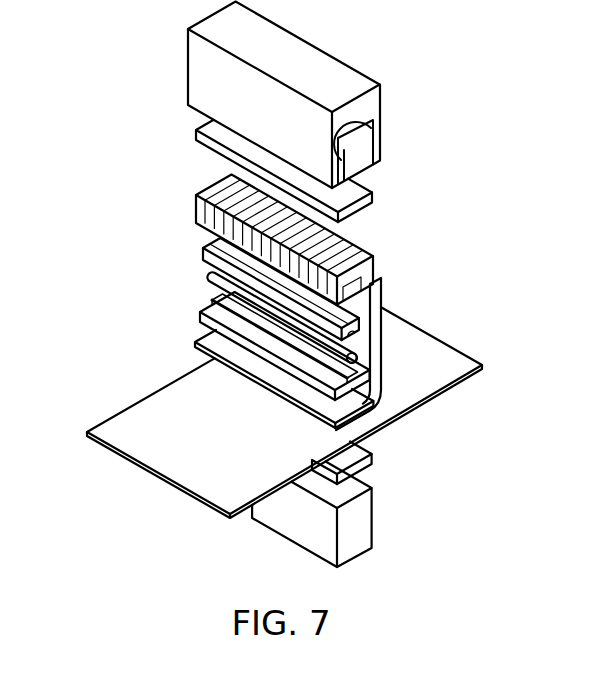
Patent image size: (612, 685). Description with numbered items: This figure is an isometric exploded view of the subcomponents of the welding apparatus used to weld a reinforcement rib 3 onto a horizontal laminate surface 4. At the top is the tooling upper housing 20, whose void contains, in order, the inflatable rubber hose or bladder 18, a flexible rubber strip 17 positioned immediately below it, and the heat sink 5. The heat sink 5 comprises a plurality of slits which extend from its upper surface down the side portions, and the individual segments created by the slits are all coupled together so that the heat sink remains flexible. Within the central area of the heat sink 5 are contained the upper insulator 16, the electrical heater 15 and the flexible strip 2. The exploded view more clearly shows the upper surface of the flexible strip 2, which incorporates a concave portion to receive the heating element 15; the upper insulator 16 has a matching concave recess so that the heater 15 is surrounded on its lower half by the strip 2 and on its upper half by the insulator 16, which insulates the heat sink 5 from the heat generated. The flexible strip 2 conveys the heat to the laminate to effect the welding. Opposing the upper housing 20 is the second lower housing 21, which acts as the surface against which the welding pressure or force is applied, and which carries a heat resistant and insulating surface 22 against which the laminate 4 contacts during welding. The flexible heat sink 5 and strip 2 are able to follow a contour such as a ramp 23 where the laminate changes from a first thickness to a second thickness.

The flexible strip 2 is at (210, 314).
The reinforcement rib 3 is at (206, 345).
The horizontal laminate surface 4 is at (127, 428).
The heat sink 5 is at (216, 189).
The electrical heater 15 is at (212, 276).
The upper insulator 16 is at (214, 249).
The flexible rubber strip 17 is at (363, 206).
The inflatable rubber hose 18 is at (352, 146).
The upper housing 20 is at (370, 103).
The lower housing 21 is at (360, 527).
The heat resistant and insulating surface 22 is at (366, 463).
The ramp 23 is at (386, 405).